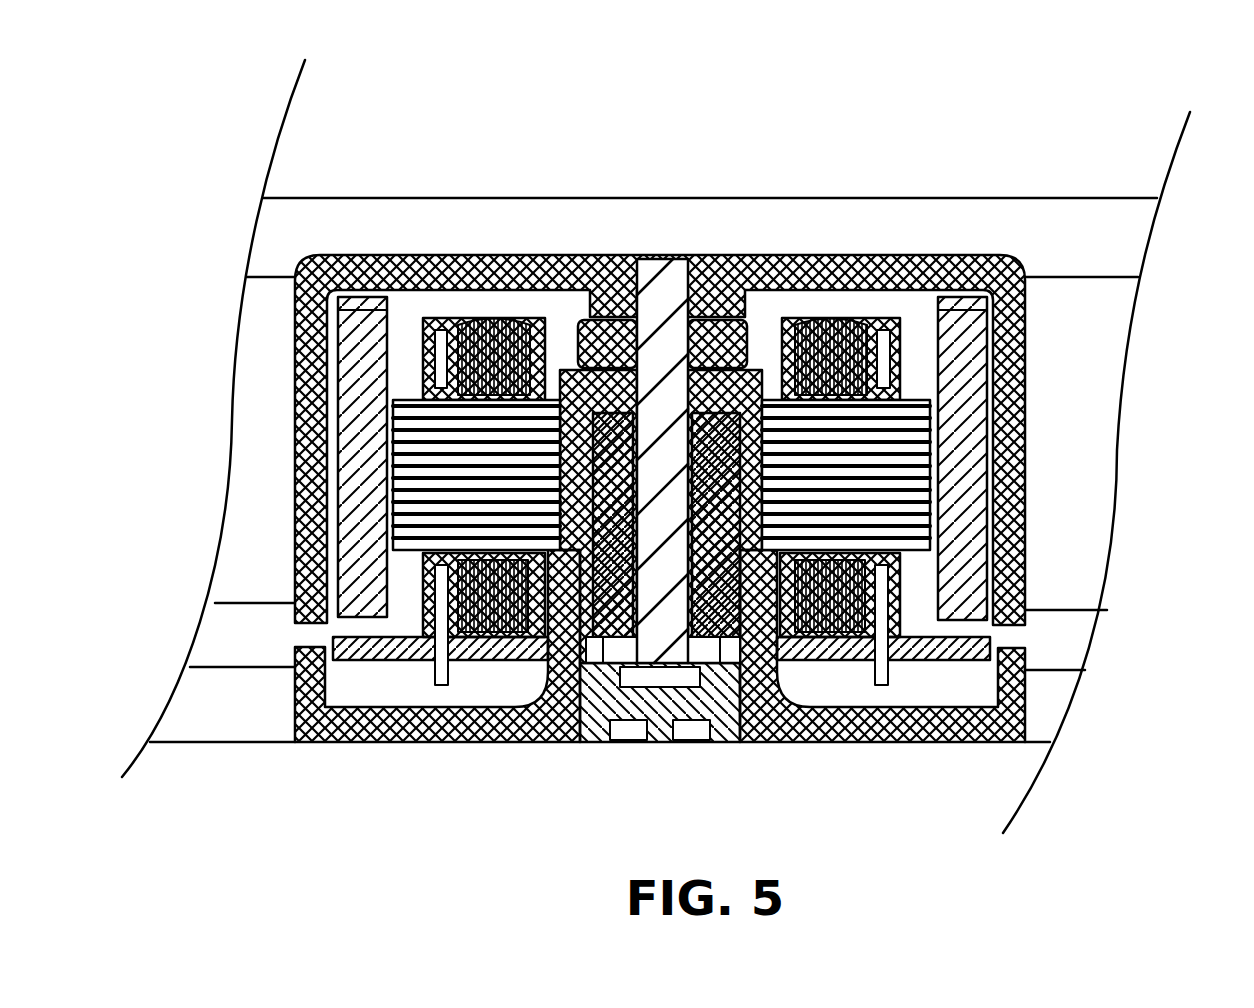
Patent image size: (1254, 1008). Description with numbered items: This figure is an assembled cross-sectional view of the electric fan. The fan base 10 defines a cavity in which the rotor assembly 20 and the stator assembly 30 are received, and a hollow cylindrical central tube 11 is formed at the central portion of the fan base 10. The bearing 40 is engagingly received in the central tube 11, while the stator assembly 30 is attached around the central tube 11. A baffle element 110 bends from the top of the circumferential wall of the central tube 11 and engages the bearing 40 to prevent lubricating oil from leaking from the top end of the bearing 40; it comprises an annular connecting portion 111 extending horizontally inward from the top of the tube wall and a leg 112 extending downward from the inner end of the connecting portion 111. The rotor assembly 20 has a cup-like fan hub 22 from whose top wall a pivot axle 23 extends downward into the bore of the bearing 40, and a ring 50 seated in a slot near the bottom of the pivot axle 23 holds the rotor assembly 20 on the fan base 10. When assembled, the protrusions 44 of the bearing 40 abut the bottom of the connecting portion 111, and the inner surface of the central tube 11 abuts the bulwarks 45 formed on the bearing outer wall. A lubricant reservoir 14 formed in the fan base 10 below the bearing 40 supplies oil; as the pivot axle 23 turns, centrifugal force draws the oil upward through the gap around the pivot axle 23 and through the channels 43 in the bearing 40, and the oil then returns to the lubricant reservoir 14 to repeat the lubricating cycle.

The fan base 10 is at (837, 742).
The central tube 11 is at (455, 472).
The lubricant reservoir 14 is at (675, 735).
The rotor assembly 20 is at (1077, 480).
The fan hub 22 is at (975, 270).
The pivot axle 23 is at (663, 295).
The stator assembly 30 is at (1003, 388).
The bearing 40 is at (797, 327).
The channels 43 is at (597, 637).
The protrusions 44 is at (450, 410).
The bulwarks 45 is at (600, 640).
The ring 50 is at (603, 700).
The baffle element 110 is at (510, 121).
The connecting portion 111 is at (596, 372).
The leg 112 is at (628, 410).